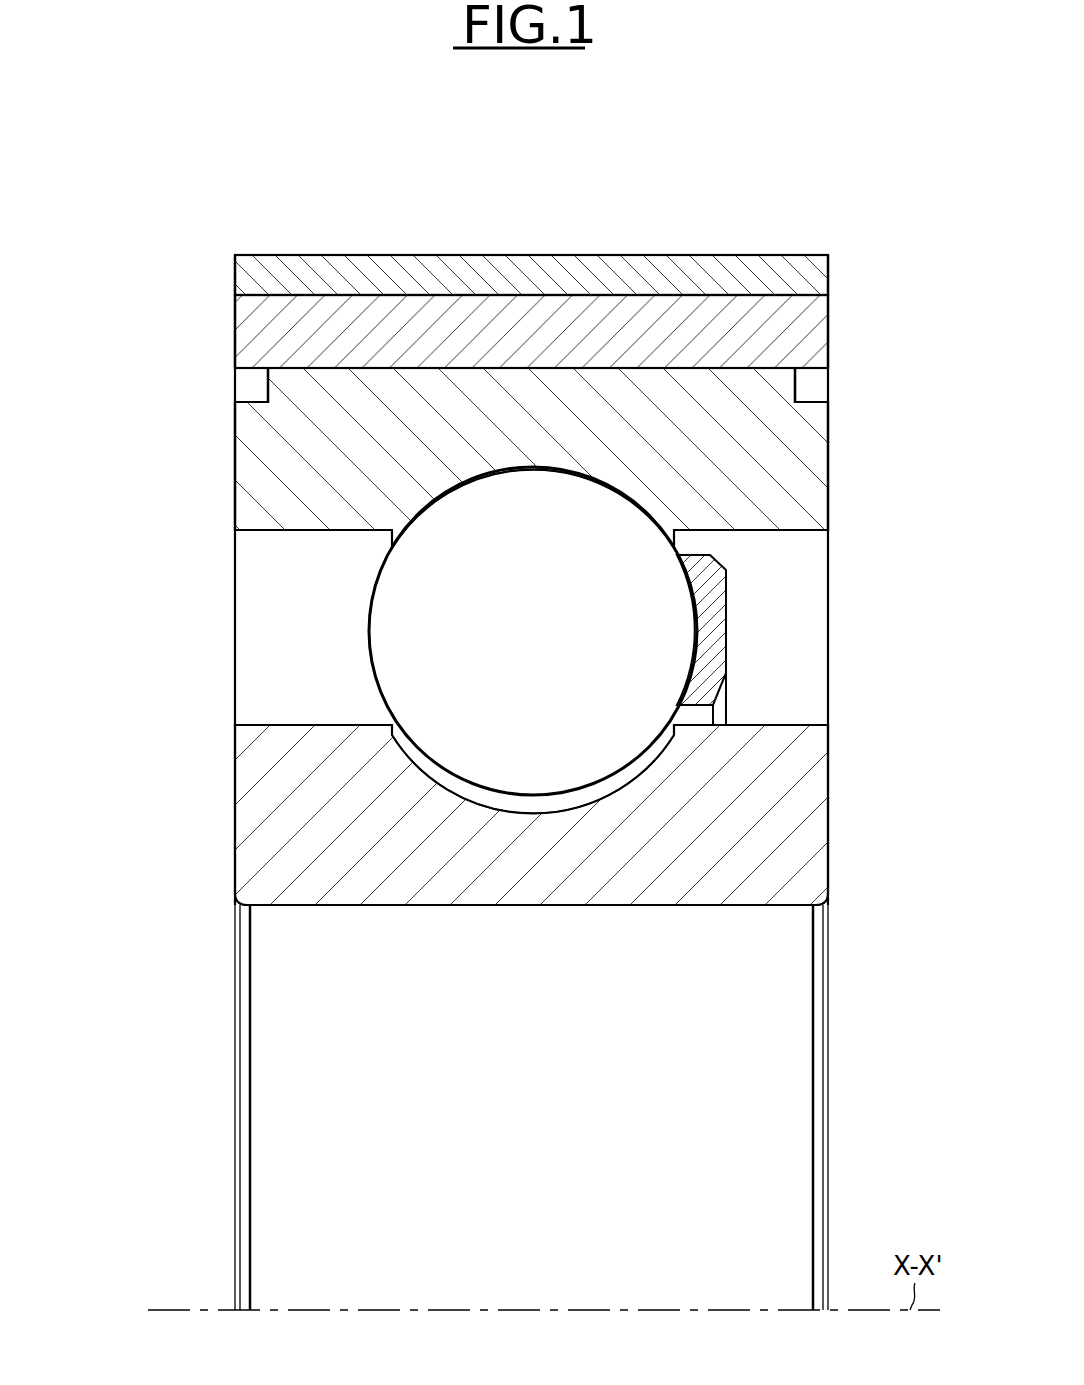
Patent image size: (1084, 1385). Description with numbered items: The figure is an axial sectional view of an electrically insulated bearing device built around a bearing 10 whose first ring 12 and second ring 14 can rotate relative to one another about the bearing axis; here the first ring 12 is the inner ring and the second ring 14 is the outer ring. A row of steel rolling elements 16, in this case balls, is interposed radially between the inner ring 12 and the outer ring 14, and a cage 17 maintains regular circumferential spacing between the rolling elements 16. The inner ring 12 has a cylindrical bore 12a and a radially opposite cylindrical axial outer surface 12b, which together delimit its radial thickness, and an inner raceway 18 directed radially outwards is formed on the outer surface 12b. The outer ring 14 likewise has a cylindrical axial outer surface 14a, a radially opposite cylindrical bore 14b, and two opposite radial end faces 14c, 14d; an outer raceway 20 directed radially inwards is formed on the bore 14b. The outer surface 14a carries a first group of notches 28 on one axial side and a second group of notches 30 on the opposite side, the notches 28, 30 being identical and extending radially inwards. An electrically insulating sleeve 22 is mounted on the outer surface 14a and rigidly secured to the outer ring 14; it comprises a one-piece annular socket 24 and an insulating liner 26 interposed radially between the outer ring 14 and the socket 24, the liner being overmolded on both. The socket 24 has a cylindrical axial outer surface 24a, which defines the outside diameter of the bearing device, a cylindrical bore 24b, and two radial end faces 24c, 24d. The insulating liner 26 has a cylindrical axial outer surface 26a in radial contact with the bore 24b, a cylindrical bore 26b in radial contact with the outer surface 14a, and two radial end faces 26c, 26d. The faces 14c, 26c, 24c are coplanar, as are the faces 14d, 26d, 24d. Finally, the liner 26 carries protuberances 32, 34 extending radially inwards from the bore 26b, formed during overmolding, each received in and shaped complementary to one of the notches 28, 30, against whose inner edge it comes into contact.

The bearing 10 is at (124, 454).
The first ring 12 is at (228, 837).
The cylindrical bore 12a is at (332, 907).
The cylindrical axial outer surface 12b is at (287, 724).
The second ring 14 is at (228, 477).
The cylindrical axial outer surface 14a is at (730, 367).
The cylindrical bore 14b is at (276, 532).
The radial end face 14c is at (235, 515).
The radial end face 14d is at (830, 475).
The rolling elements 16 is at (548, 645).
The cage 17 is at (715, 635).
The inner raceway 18 is at (533, 790).
The outer raceway 20 is at (572, 475).
The electrically insulating sleeve 22 is at (175, 329).
The socket 24 is at (289, 250).
The cylindrical axial outer surface 24a is at (484, 257).
The cylindrical bore 24b is at (398, 301).
The radial end face 24c is at (235, 272).
The radial end face 24d is at (830, 275).
The insulating liner 26 is at (228, 350).
The cylindrical axial outer surface 26a is at (593, 296).
The cylindrical bore 26b is at (327, 368).
The radial end face 26c is at (235, 305).
The radial end face 26d is at (830, 315).
The first group of notches 28 is at (260, 404).
The second group of notches 30 is at (815, 399).
The protuberance 32 is at (256, 385).
The protuberance 34 is at (806, 386).